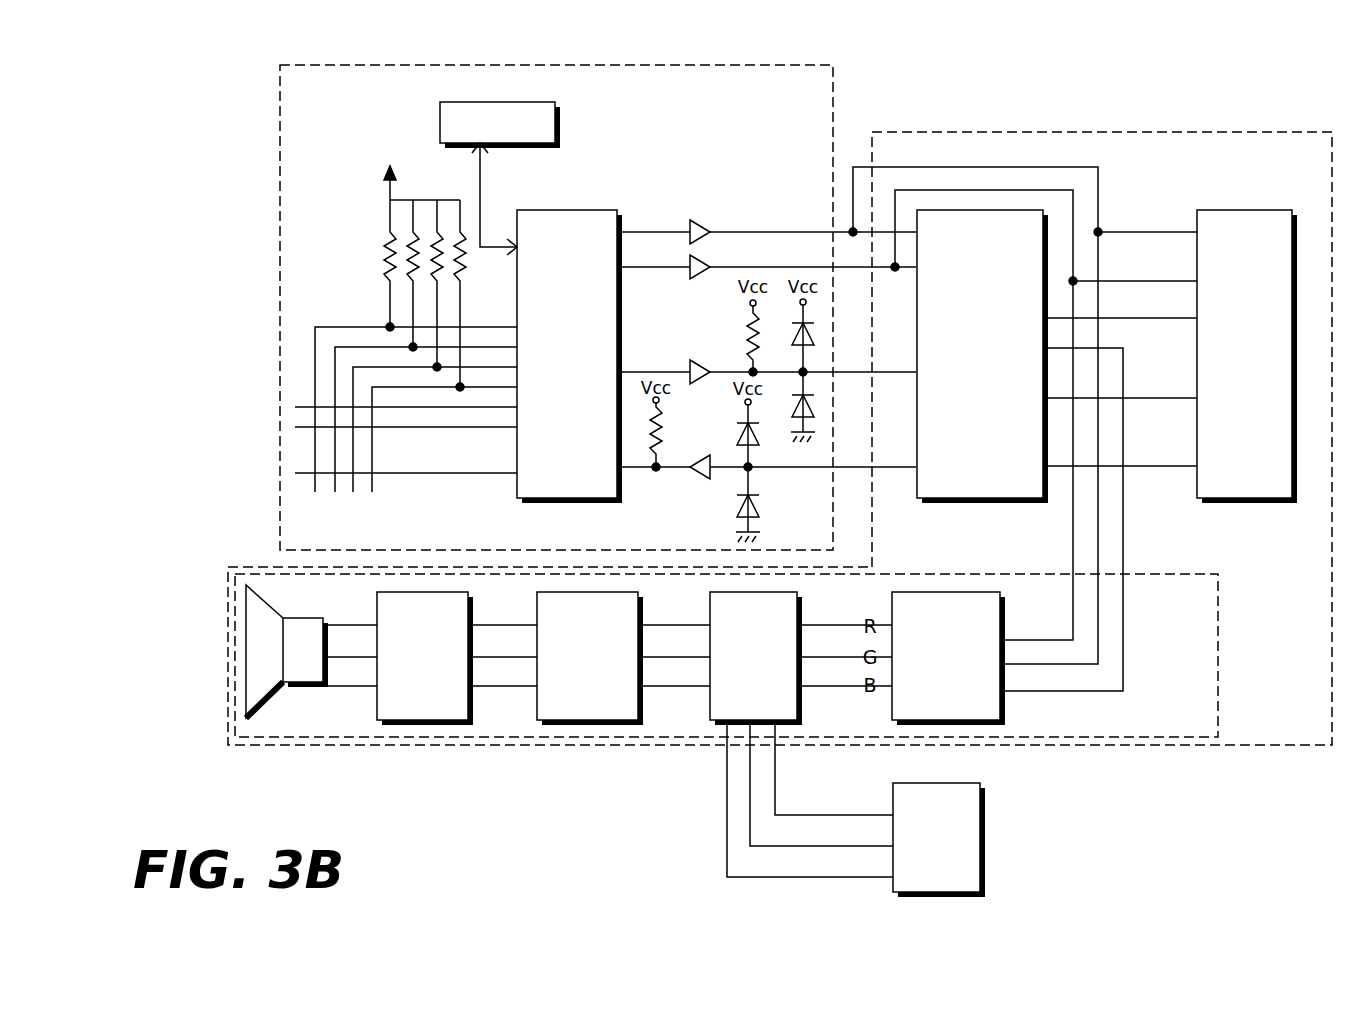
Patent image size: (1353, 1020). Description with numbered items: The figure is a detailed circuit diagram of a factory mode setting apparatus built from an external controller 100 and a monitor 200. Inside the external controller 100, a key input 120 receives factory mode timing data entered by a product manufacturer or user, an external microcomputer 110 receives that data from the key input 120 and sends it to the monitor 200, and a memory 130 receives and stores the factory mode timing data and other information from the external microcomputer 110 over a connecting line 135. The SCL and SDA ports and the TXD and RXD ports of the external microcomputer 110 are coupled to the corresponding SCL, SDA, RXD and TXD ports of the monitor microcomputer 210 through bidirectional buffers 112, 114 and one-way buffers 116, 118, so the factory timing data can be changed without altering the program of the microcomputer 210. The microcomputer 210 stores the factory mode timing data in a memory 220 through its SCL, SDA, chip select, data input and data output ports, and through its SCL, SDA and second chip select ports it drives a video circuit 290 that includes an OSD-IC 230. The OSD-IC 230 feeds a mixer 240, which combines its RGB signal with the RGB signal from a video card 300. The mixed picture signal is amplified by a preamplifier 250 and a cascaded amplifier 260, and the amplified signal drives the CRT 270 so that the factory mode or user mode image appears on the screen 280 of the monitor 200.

The external controller 100 is at (281, 297).
The external microcomputer 110 is at (594, 210).
The bidirectional buffer 112 is at (698, 226).
The bidirectional buffer 114 is at (698, 280).
The one way buffer 116 is at (698, 366).
The one way buffer 118 is at (698, 458).
The key input 120 is at (315, 385).
The memory 130 is at (557, 130).
The memory bus 135 is at (481, 200).
The monitor 200 is at (1130, 745).
The microcomputer 210 is at (943, 503).
The memory 220 is at (1250, 210).
The OSD-IC 230 is at (984, 592).
The mixer 240 is at (802, 622).
The preamplifier 250 is at (642, 622).
The amplifier 260 is at (472, 618).
The CRT 270 is at (296, 688).
The screen 280 is at (246, 646).
The video circuit 290 is at (1218, 625).
The video card 300 is at (985, 840).